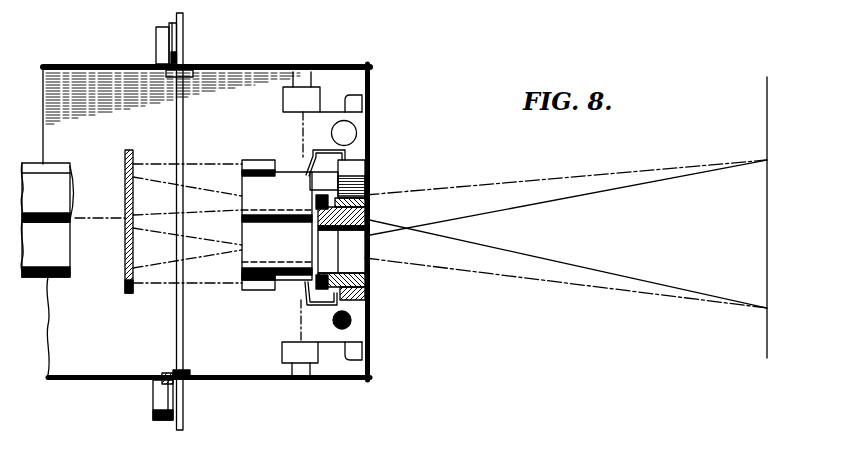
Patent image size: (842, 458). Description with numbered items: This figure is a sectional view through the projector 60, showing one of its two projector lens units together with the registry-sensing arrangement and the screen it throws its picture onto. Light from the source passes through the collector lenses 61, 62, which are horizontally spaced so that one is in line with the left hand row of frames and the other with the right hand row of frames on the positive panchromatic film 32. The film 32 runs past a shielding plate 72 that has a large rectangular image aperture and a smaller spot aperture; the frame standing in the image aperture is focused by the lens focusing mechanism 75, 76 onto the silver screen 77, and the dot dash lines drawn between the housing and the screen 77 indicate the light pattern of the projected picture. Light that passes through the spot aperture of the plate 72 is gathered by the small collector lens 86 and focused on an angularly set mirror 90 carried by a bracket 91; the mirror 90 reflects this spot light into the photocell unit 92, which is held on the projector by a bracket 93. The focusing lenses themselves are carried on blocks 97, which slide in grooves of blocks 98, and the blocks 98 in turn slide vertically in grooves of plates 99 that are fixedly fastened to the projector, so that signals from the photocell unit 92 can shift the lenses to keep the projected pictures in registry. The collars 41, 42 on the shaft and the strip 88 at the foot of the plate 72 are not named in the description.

The positive panchromatic film 32 is at (135, 185).
The lower shaft collar 41 is at (190, 421).
The upper shaft collar 42 is at (224, 42).
The projector 60 is at (280, 65).
The collector lens 61 is at (48, 280).
The collector lens 62 is at (66, 175).
The shielding plate 72 is at (125, 157).
The lens focusing mechanism 75 is at (287, 258).
The lens focusing mechanism 76 is at (284, 170).
The silver screen 77 is at (768, 205).
The small collector lens 86 is at (254, 284).
The plate bottom strip 88 is at (125, 291).
The angularly set mirror 90 is at (309, 173).
The bracket 91 is at (332, 146).
The photocell unit 92 is at (318, 98).
The bracket 93 is at (349, 108).
The block 97 is at (322, 282).
The block 98 is at (367, 224).
The plate 99 is at (352, 205).